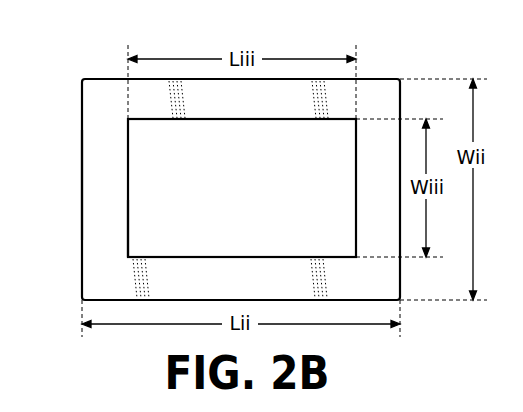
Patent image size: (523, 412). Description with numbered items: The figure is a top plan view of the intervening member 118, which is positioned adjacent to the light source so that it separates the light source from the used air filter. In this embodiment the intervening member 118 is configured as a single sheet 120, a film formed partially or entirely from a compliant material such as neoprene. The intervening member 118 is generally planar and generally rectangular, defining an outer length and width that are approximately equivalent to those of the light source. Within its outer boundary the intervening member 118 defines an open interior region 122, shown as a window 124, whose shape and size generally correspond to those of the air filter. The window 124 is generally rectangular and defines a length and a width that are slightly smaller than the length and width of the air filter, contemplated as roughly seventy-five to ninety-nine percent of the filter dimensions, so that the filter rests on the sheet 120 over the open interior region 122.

The intervening member 118 is at (72, 104).
The sheet 120 is at (95, 161).
The window 124 is at (160, 198).
The open interior region 122 is at (152, 239).